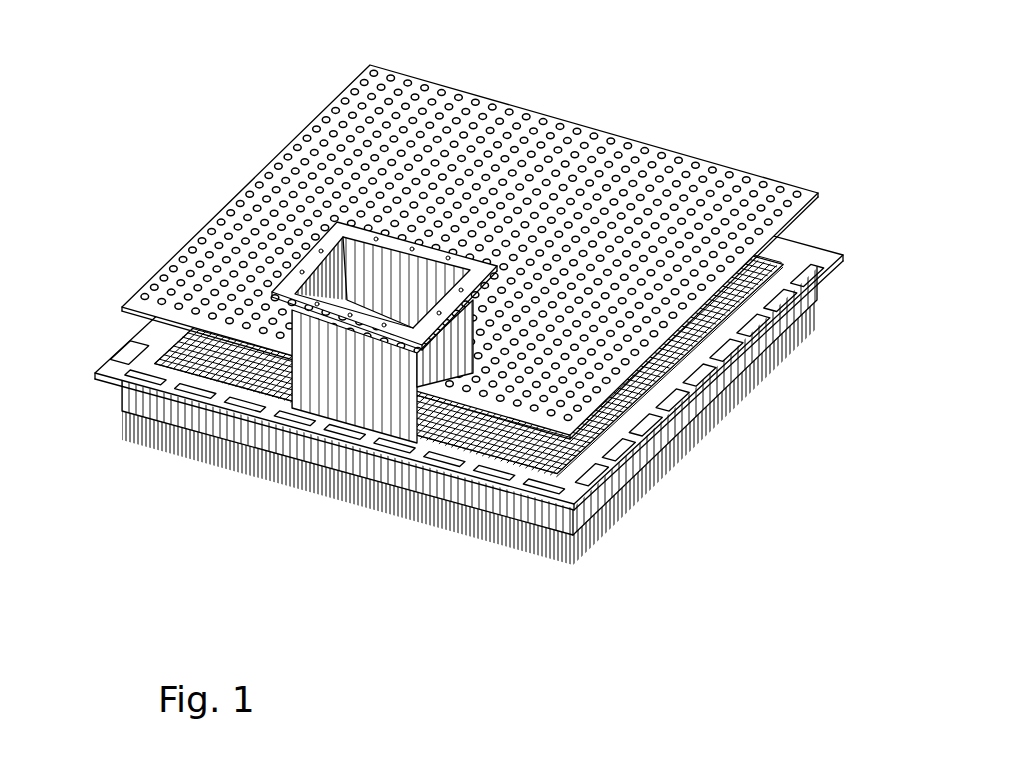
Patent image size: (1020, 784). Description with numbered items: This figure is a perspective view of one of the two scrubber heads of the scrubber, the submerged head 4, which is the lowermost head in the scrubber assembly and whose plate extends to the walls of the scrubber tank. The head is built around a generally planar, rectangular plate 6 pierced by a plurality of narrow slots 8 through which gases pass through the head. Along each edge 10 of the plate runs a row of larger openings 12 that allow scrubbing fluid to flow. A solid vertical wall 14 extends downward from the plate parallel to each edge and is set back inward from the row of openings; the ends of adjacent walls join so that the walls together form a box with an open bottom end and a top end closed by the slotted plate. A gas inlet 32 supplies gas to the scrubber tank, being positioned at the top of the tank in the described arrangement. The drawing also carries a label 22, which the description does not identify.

The submerged head 4 is at (710, 433).
The rectangular plate 6 is at (143, 337).
The narrow slots 8 is at (813, 258).
The edge 10 is at (803, 242).
The larger openings 12 is at (137, 348).
The solid vertical wall 14 is at (552, 520).
The perforated plate 22 is at (333, 98).
The gas inlet 32 is at (372, 276).